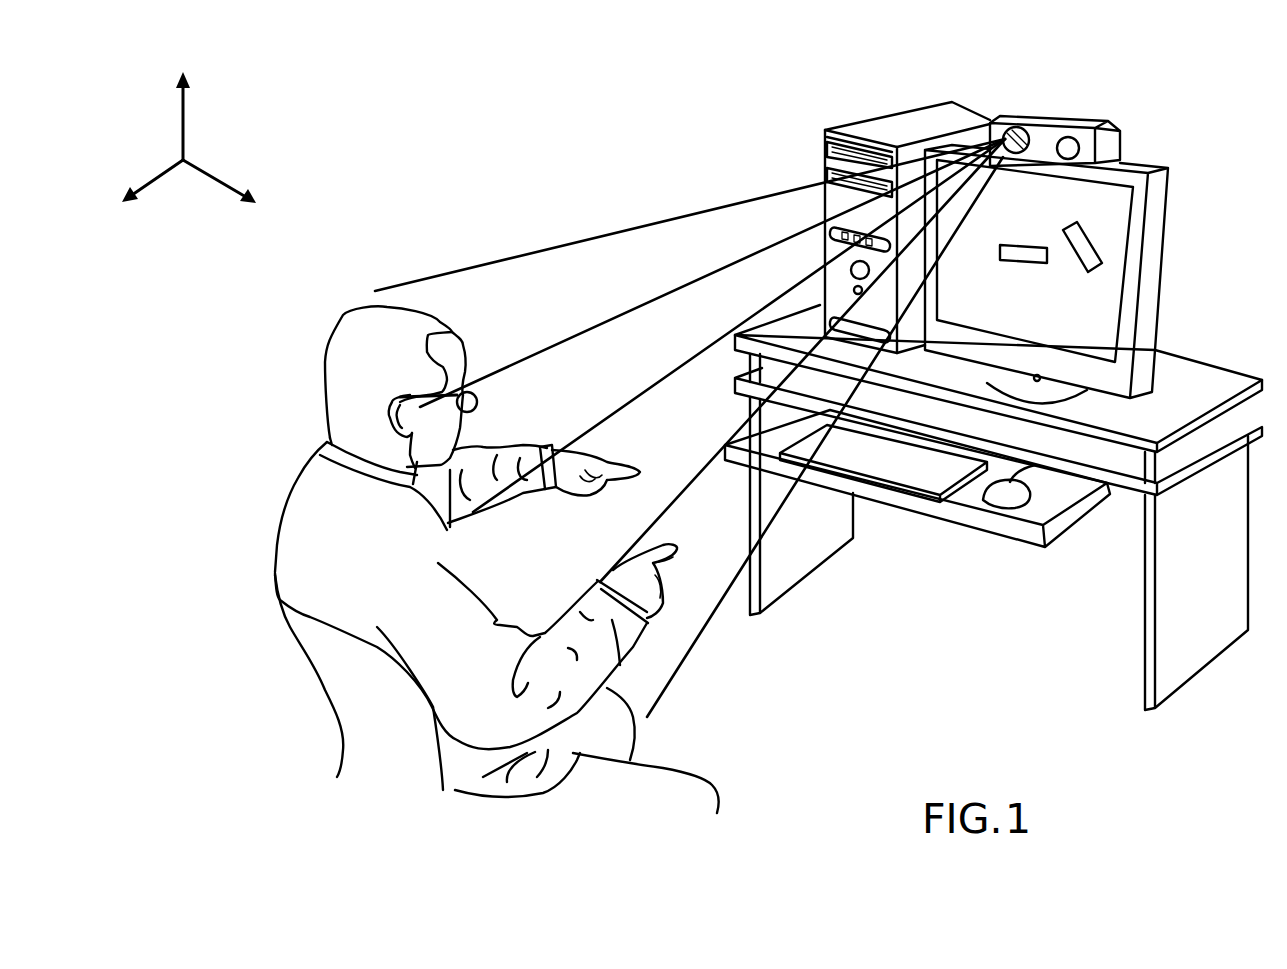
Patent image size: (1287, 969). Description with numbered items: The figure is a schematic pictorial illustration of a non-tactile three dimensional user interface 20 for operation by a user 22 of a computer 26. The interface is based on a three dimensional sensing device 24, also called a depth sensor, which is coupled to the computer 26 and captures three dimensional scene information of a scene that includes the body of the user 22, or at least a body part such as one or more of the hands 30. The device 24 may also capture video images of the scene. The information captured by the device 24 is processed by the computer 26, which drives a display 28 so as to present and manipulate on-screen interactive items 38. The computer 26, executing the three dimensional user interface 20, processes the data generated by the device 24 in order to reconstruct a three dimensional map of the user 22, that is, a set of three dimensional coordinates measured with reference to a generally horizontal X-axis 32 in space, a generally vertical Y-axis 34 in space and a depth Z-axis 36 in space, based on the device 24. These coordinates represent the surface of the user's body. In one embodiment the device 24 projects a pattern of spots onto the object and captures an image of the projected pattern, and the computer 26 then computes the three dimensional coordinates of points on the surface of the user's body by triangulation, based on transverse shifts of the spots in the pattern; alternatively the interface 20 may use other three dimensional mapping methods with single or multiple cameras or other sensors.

The non-tactile three dimensional (3D) user interface 20 is at (430, 210).
The user 22 is at (327, 344).
The 3D sensing device 24 is at (1122, 143).
The computer 26 is at (880, 124).
The display 28 is at (1167, 260).
The hands 30 is at (593, 497).
The X-axis 32 is at (224, 186).
The Y-axis 34 is at (183, 117).
The Z-axis 36 is at (141, 184).
The on-screen interactive items 38 is at (1025, 262).